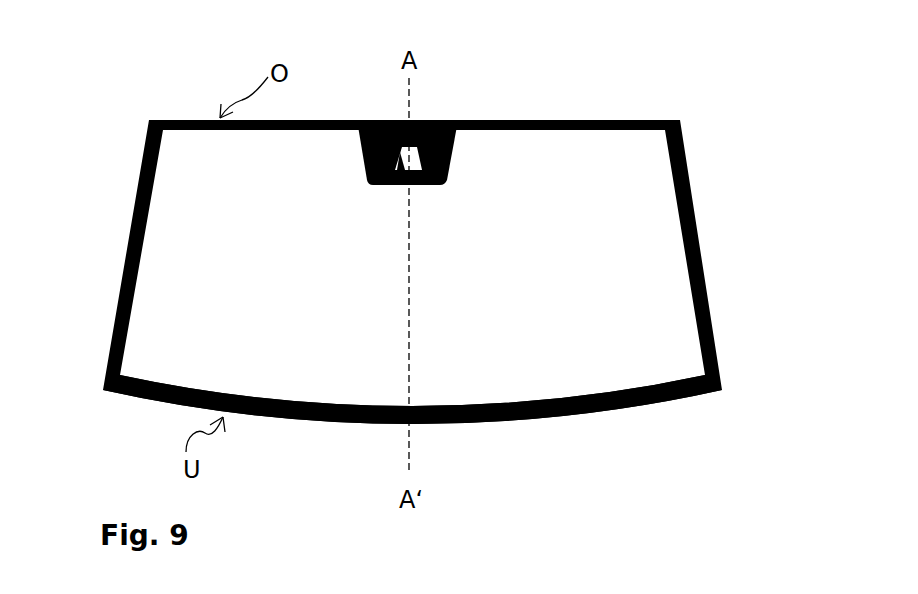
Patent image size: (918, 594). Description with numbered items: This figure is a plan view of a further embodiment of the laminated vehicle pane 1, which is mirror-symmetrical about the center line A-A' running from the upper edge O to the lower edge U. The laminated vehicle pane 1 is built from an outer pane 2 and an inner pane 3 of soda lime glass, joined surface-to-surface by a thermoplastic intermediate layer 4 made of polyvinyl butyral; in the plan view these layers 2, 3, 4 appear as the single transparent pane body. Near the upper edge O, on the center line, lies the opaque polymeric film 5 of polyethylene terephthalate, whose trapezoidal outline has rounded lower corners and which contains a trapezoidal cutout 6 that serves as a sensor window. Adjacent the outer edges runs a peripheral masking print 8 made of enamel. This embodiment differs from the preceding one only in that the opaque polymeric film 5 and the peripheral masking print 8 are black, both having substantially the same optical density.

The laminated vehicle pane 1 is at (433, 275).
The outer pane 2 is at (444, 275).
The inner pane 3 is at (412, 275).
The thermoplastic intermediate layer 4 is at (412, 275).
The opaque polymeric film 5 is at (438, 122).
The cutout 6 is at (392, 122).
The peripheral masking print 8 is at (562, 418).